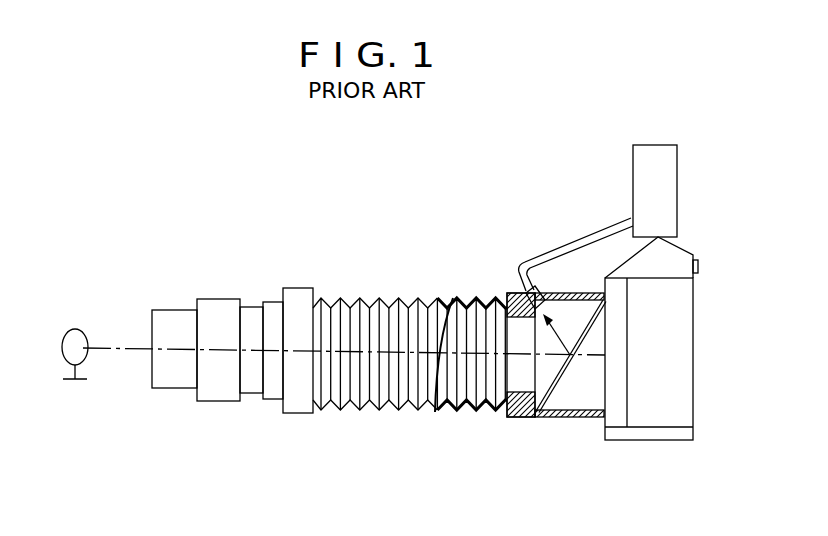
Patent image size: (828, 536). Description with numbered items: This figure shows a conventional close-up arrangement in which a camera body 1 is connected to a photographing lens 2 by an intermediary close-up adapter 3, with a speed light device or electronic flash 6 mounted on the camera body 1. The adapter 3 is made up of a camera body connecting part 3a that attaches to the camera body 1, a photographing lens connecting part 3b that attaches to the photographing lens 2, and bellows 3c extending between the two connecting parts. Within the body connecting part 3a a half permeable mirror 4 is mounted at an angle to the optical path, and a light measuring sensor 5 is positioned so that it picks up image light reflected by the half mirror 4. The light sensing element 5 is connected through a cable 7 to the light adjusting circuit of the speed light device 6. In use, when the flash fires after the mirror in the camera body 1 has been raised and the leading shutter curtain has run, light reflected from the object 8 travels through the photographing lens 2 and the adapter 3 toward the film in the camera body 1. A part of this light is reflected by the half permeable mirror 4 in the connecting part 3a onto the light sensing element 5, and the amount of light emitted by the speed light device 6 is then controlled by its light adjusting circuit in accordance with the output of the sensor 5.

The camera body 1 is at (680, 270).
The photographing lens 2 is at (216, 392).
The close-up adapter 3 is at (410, 393).
The camera body connecting part 3a is at (580, 418).
The photographing lens connecting part 3b is at (297, 404).
The bellows 3c is at (413, 380).
The half permeable mirror 4 is at (550, 418).
The light measuring sensor 5 is at (523, 292).
The speed light device 6 is at (643, 193).
The cable 7 is at (582, 243).
The object 8 is at (80, 338).